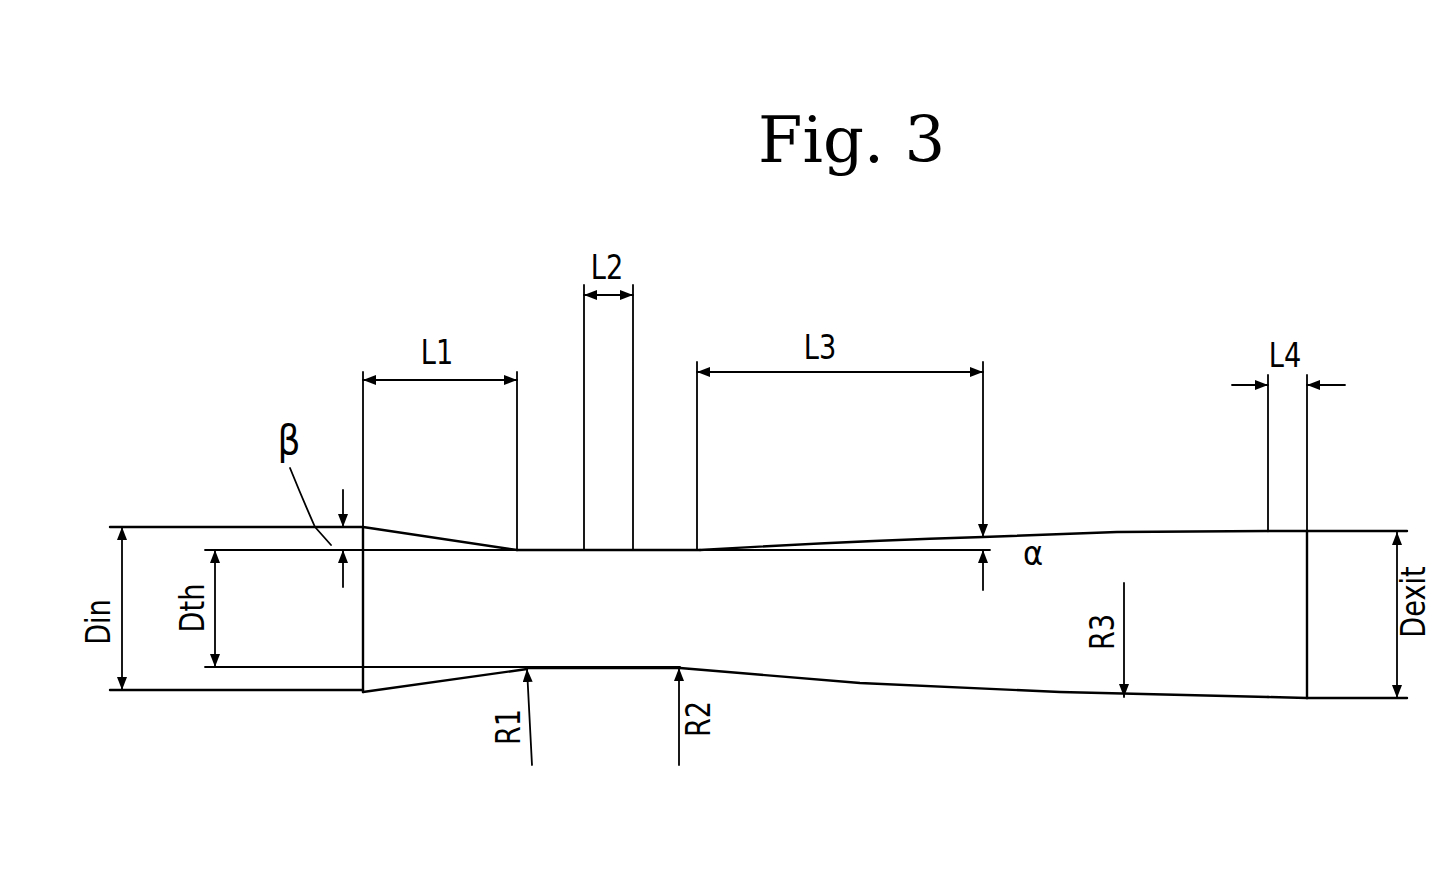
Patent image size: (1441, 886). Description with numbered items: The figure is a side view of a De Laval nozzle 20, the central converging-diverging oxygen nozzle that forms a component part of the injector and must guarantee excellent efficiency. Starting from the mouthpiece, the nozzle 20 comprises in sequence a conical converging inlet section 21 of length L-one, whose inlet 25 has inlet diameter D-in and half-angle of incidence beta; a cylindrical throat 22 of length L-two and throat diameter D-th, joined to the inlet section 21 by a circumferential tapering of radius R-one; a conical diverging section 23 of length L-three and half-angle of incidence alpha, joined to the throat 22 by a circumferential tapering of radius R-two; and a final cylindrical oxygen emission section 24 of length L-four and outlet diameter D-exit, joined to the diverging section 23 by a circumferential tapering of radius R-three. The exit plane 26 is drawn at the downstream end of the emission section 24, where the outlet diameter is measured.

The nozzle 20 is at (758, 610).
The conical converging inlet section 21 is at (418, 688).
The cylindrical throat 22 is at (613, 668).
The conical diverging section 23 is at (905, 686).
The final cylindrical oxygen emission section 24 is at (1223, 698).
The inlet 25 is at (363, 613).
The exit plane 26 is at (1307, 618).